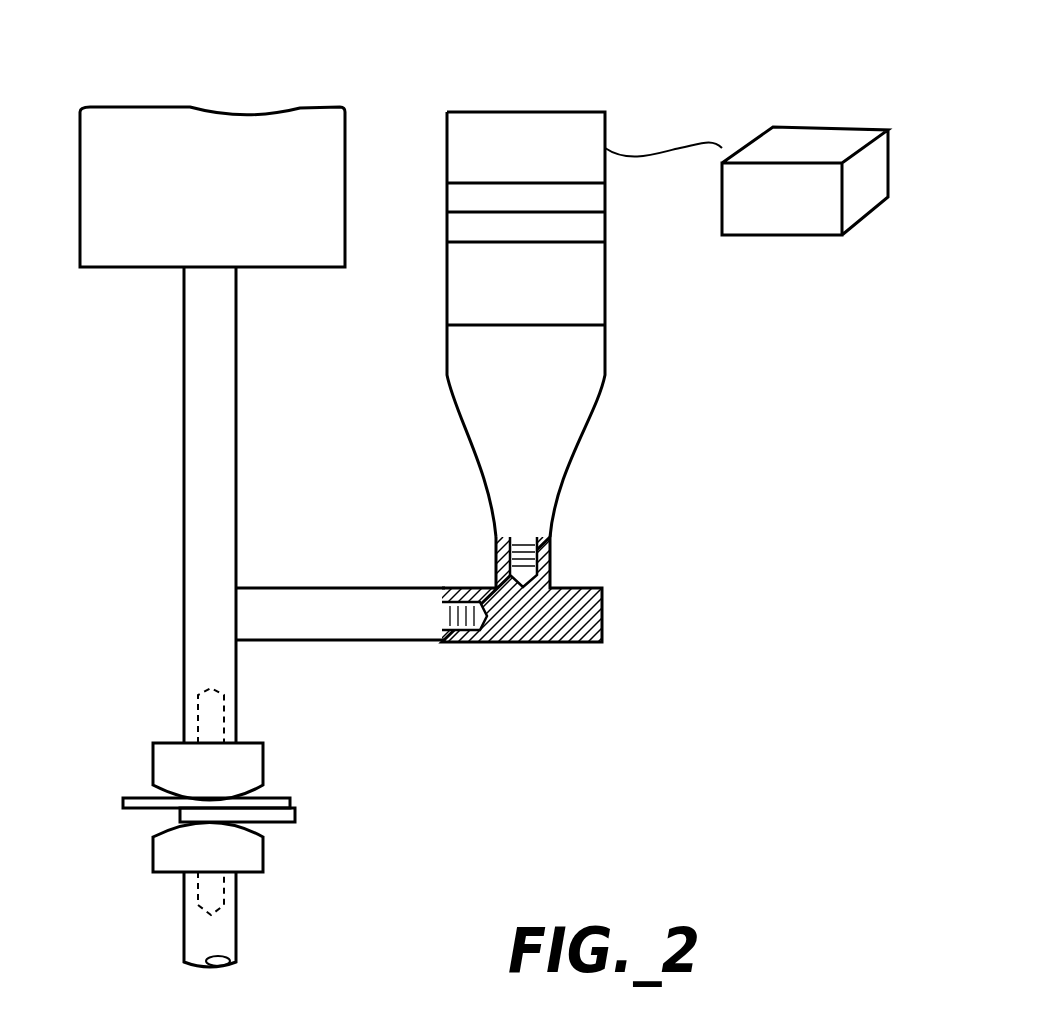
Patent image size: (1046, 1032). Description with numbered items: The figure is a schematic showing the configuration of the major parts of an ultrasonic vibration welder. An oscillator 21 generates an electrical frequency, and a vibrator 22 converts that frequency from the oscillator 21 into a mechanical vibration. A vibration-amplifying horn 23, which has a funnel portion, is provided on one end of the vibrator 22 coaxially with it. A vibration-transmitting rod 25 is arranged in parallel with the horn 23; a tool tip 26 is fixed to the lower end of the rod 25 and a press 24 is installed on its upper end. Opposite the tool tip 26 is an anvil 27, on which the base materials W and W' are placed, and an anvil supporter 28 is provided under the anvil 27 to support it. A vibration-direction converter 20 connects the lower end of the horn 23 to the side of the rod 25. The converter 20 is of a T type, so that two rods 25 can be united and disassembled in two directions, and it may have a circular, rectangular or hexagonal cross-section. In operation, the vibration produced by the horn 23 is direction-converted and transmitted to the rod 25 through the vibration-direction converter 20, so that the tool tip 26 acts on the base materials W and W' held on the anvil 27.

The vibration-direction converter 20 is at (602, 620).
The oscillator 21 is at (822, 140).
The vibrator 22 is at (568, 140).
The vibration-amplifying horn 23 is at (565, 440).
The press 24 is at (177, 135).
The vibration-transmitting rod 25 is at (188, 443).
The tool tip 26 is at (157, 755).
The anvil 27 is at (262, 848).
The anvil supporter 28 is at (233, 923).
The base material W is at (168, 823).
The base material W' is at (277, 790).